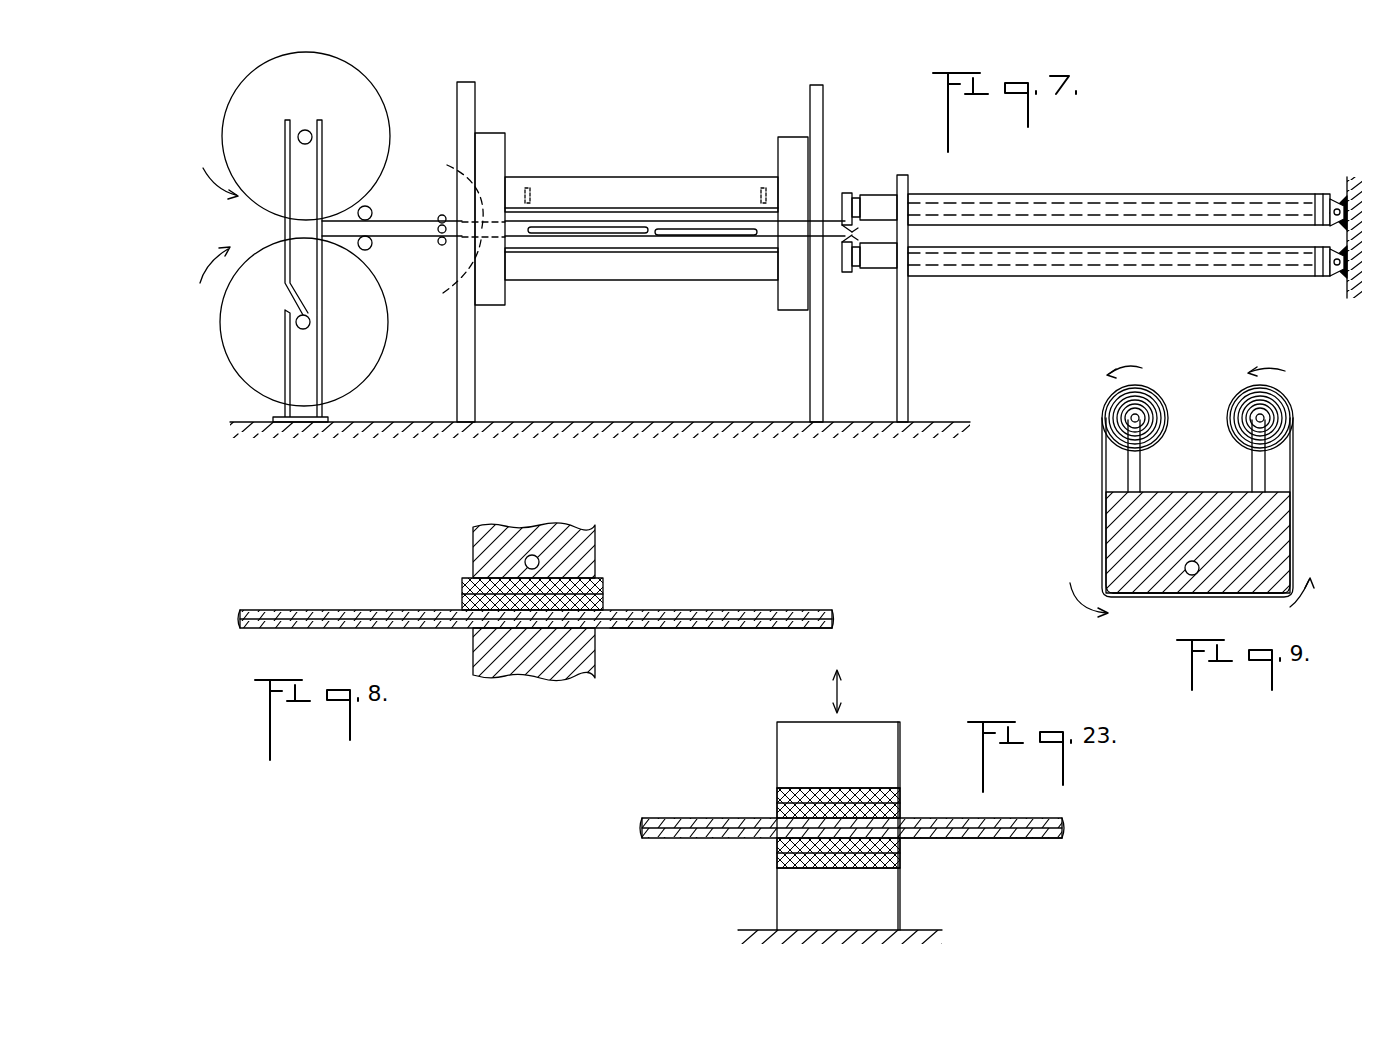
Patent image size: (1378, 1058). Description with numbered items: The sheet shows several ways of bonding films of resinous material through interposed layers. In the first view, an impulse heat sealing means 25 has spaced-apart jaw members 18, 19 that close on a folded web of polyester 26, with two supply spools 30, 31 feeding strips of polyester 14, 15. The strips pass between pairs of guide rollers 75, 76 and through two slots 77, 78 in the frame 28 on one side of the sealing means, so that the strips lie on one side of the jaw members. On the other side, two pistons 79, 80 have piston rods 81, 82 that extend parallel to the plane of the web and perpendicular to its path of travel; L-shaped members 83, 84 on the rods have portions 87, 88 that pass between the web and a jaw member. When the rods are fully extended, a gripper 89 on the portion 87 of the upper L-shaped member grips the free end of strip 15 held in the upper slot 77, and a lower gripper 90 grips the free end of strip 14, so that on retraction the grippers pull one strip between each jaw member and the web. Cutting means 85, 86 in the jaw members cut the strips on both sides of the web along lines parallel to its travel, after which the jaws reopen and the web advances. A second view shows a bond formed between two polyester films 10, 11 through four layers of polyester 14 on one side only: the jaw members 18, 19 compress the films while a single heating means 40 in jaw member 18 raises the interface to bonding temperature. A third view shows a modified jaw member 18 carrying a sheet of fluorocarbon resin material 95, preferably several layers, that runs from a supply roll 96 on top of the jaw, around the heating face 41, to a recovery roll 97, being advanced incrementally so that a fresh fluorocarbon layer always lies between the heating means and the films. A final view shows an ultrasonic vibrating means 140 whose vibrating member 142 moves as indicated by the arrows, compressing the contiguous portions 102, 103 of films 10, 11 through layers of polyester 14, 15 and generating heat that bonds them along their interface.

In FIG. 8, the polyester film 10 is at (743, 610).
In FIG. 23, the polyester film 10 is at (1018, 820).
In FIG. 8, the polyester film 11 is at (750, 632).
In FIG. 23, the polyester film 11 is at (1017, 840).
In FIG. 7, the strip of polyester 14 is at (388, 240).
In FIG. 8, the strip of polyester 14 is at (612, 586).
In FIG. 23, the strip of polyester 14 is at (777, 797).
In FIG. 7, the strip of polyester 15 is at (388, 218).
In FIG. 23, the strip of polyester 15 is at (777, 850).
In FIG. 7, the jaw member 18 is at (602, 270).
In FIG. 8, the jaw member 18 is at (475, 532).
In FIG. 9, the jaw member 18 is at (1277, 523).
In FIG. 7, the jaw member 19 is at (606, 188).
In FIG. 7, the impulse heat sealing means 25 is at (536, 110).
In FIG. 7, the folded web of polyester 26 is at (675, 236).
In FIG. 7, the frame 28 is at (458, 83).
In FIG. 7, the supply spool 30 is at (232, 347).
In FIG. 7, the supply spool 31 is at (340, 68).
In FIG. 8, the heating means 40 is at (525, 562).
In FIG. 9, the heating means 40 is at (1192, 577).
In FIG. 9, the heating face 41 is at (1152, 600).
In FIG. 7, the guide rollers 75 is at (440, 213).
In FIG. 7, the guide rollers 76 is at (438, 245).
In FIG. 7, the slot 77 is at (453, 186).
In FIG. 7, the slot 78 is at (452, 278).
In FIG. 7, the piston 79 is at (1228, 200).
In FIG. 7, the piston 80 is at (1193, 270).
In FIG. 7, the piston rod 81 is at (858, 196).
In FIG. 7, the piston rod 82 is at (857, 272).
In FIG. 7, the L-shaped member 83 is at (848, 193).
In FIG. 7, the L-shaped member 84 is at (845, 273).
In FIG. 7, the cutting means 85 is at (532, 198).
In FIG. 7, the cutting means 86 is at (762, 197).
In FIG. 7, the portion of L-shaped member 87 is at (846, 228).
In FIG. 7, the portion of L-shaped member 88 is at (838, 242).
In FIG. 7, the gripper 89 is at (853, 234).
In FIG. 7, the gripper 90 is at (880, 253).
In FIG. 9, the sheet of fluorocarbon resin material 95 is at (1102, 512).
In FIG. 9, the supply roll 96 is at (1148, 388).
In FIG. 9, the recovery roll 97 is at (1238, 397).
In FIG. 23, the contiguous portion 102 is at (867, 798).
In FIG. 23, the contiguous portion 103 is at (893, 862).
In FIG. 23, the ultrasonic vibrating means 140 is at (765, 745).
In FIG. 23, the ultrasonic vibrating member 142 is at (902, 748).